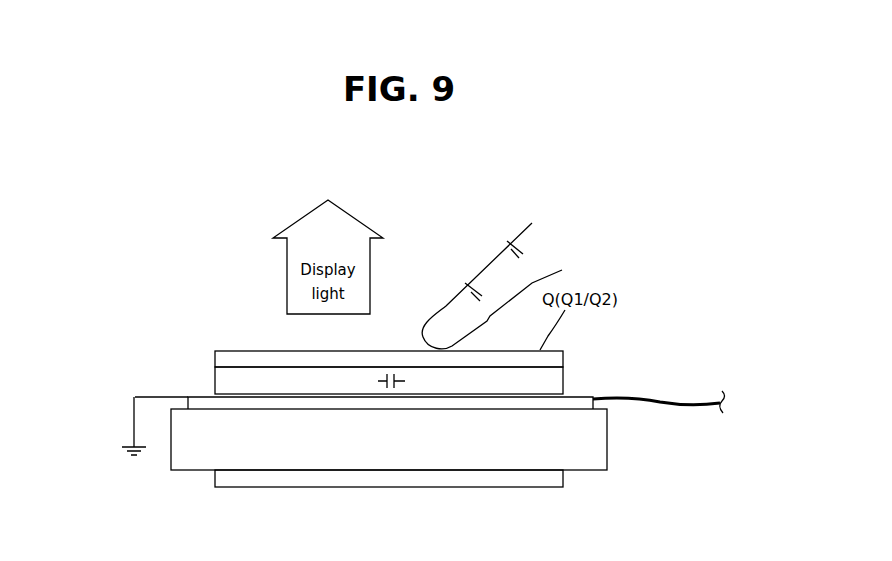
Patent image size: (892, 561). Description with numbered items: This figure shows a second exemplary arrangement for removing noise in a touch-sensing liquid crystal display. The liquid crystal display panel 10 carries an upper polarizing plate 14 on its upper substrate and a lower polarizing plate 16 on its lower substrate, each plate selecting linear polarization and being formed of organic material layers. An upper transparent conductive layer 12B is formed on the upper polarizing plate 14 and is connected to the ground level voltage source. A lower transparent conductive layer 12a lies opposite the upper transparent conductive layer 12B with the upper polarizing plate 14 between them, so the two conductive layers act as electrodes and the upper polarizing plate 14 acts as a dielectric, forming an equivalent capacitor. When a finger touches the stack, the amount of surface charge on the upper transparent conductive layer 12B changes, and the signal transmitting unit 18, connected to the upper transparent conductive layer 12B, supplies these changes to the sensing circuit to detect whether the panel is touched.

The liquid crystal display panel 10 is at (602, 441).
The lower transparent conductive layer 12a is at (135, 397).
The upper transparent conductive layer 12B is at (215, 352).
The upper polarizing plate 14 is at (215, 384).
The lower polarizing plate 16 is at (565, 478).
The signal transmitting unit 18 is at (662, 400).